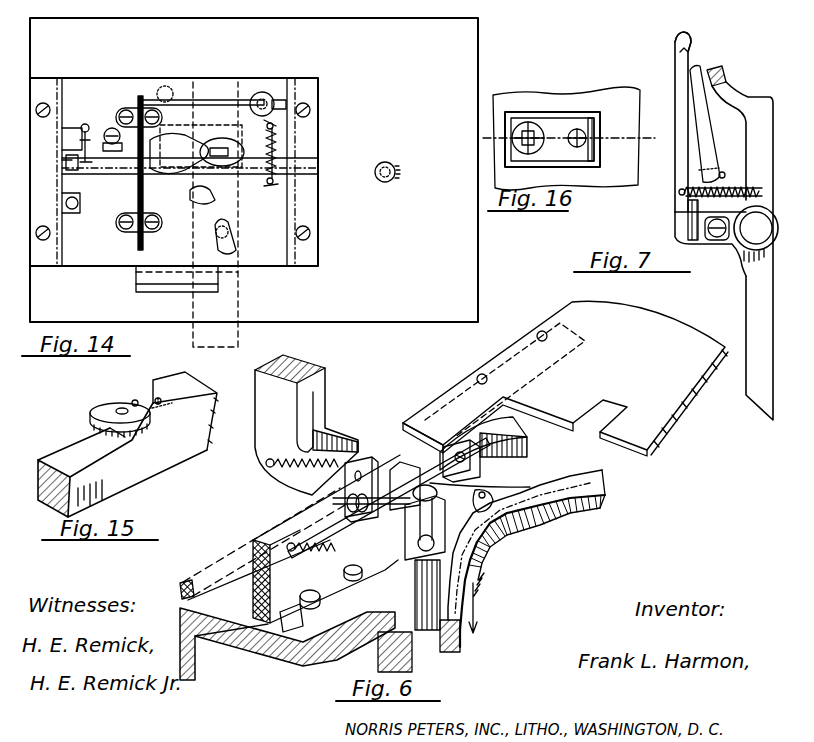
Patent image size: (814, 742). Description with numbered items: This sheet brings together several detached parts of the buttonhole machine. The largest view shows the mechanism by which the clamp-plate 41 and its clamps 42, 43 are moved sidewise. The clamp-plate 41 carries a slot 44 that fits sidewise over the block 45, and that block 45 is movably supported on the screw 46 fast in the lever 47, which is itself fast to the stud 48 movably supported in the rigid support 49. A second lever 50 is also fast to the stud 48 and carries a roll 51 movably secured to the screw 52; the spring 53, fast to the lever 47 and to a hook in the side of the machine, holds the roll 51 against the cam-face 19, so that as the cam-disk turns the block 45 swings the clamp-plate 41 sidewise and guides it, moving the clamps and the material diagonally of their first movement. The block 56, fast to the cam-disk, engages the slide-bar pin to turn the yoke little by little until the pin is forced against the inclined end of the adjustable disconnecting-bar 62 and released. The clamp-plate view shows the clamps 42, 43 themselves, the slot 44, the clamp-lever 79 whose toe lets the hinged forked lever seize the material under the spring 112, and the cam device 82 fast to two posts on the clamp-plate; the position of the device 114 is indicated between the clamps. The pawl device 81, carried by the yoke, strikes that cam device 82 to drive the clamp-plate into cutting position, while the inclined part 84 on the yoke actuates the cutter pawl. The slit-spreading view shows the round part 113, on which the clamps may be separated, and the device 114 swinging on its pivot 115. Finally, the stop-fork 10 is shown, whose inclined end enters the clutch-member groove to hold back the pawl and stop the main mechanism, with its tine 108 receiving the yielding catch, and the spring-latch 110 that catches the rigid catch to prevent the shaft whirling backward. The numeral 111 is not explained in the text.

In FIG. 7, the stop-fork 10 is at (740, 98).
In FIG. 6, the cam-face 19 is at (574, 482).
In FIG. 14, the clamp-plate 41 is at (409, 170).
In FIG. 14, the clamp 42 is at (266, 82).
In FIG. 14, the clamp 43 is at (272, 278).
In FIG. 14, the slot 44 is at (177, 279).
In FIG. 6, the block 45 is at (480, 464).
In FIG. 6, the screw 46 is at (466, 432).
In FIG. 6, the lever 47 is at (335, 530).
In FIG. 6, the stud 48 is at (486, 553).
In FIG. 6, the rigid support 49 is at (419, 584).
In FIG. 6, the lever 50 is at (528, 525).
In FIG. 6, the roll 51 is at (538, 494).
In FIG. 6, the screw 52 is at (398, 442).
In FIG. 6, the spring 53 is at (306, 556).
In FIG. 6, the block 56 is at (325, 602).
In FIG. 6, the adjustable disconnecting-bar 62 is at (354, 547).
In FIG. 14, the clamp-lever 79 is at (243, 107).
In FIG. 14, the pawl device 81 is at (236, 246).
In FIG. 15, the pawl device 81 is at (96, 412).
In FIG. 14, the cam device 82 is at (160, 236).
In FIG. 6, the inclined part 84 is at (330, 428).
In FIG. 7, the tine 108 is at (700, 128).
In FIG. 7, the spring-latch 110 is at (672, 60).
In FIG. 14, the pin 111 is at (78, 130).
In FIG. 14, the spring 112 is at (85, 191).
In FIG. 14, the round part 113 is at (110, 124).
In FIG. 16, the round part 113 is at (587, 128).
In FIG. 16, the device 114 is at (520, 130).
In FIG. 16, the pivot 115 is at (553, 130).